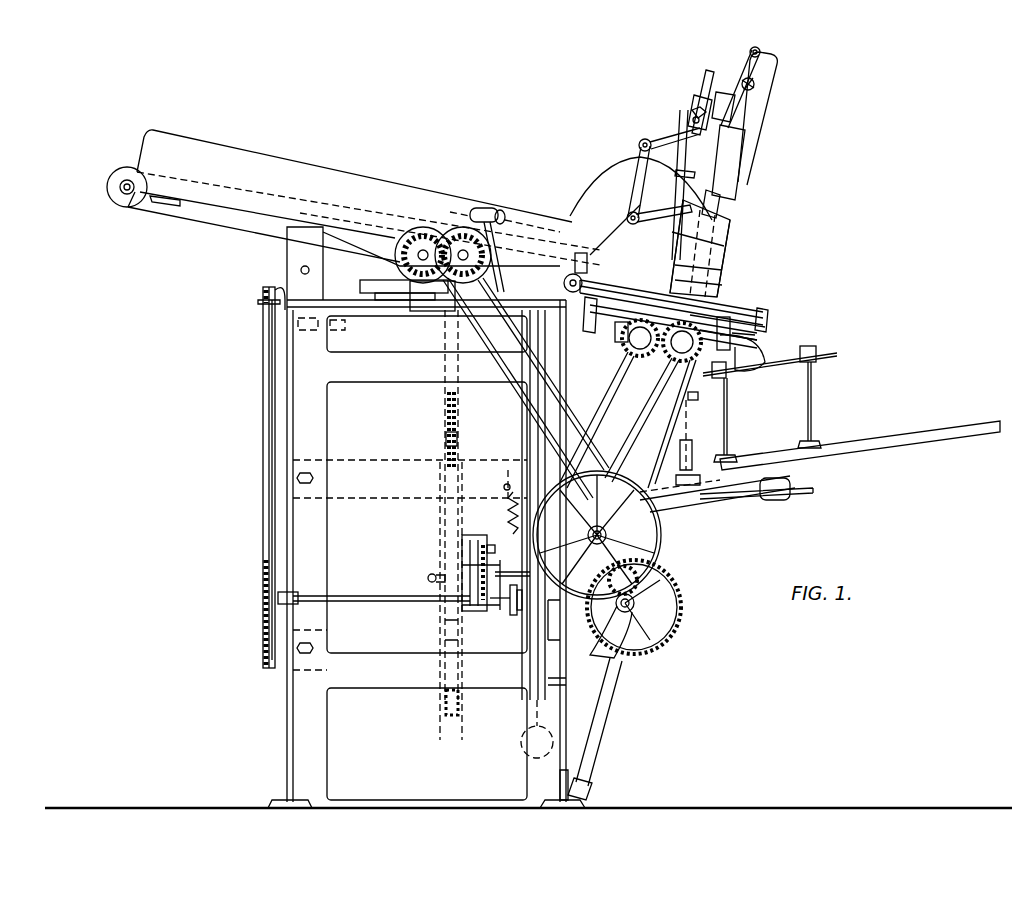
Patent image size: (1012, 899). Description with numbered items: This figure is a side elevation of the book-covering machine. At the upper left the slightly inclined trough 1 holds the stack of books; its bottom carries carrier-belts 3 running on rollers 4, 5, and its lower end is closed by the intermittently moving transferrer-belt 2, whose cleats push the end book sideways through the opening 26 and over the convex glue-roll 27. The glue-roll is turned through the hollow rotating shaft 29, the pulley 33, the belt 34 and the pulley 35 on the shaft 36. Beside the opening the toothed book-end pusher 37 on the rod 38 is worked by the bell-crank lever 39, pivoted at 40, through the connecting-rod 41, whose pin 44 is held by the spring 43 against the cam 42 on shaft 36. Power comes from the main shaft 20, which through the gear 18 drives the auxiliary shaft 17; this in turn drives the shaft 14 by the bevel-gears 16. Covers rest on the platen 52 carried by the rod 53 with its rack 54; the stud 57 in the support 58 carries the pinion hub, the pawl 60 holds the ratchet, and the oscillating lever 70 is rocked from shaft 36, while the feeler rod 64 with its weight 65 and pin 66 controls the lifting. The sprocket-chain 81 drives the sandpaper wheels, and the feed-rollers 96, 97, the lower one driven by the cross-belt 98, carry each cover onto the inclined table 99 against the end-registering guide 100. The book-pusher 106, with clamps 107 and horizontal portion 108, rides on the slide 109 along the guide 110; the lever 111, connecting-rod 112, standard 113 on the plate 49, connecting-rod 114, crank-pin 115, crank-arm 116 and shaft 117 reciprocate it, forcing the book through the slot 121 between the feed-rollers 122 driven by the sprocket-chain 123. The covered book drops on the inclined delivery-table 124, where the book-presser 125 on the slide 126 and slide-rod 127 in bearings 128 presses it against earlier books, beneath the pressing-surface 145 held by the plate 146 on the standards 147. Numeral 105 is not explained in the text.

The trough 1 is at (368, 197).
The transferrer-belt 2 is at (718, 236).
The carrier-belts 3 is at (206, 225).
The roller 4 is at (107, 188).
The roller 5 is at (746, 343).
The shaft 14 is at (601, 726).
The bevel-gears 16 is at (637, 583).
The auxiliary shaft 17 is at (666, 642).
The gear 18 is at (664, 612).
The main shaft 20 is at (645, 556).
The opening 26 is at (724, 256).
The glue-roll 27 is at (726, 274).
The hollow rotating shaft 29 is at (282, 285).
The pulley 33 is at (262, 338).
The belt 34 is at (262, 493).
The pulley 35 is at (262, 614).
The shaft 36 is at (376, 595).
The book-end pusher 37 is at (602, 207).
The rod 38 is at (500, 212).
The bell-crank lever 39 is at (494, 228).
The pivot 40 is at (495, 302).
The connecting-rod 41 is at (524, 368).
The cam 42 is at (501, 612).
The spring 43 is at (508, 517).
The pin 44 is at (515, 615).
The plate 49 is at (678, 180).
The platen 52 is at (396, 298).
The rod 53 is at (442, 407).
The rack 54 is at (443, 440).
The stud 57 is at (430, 576).
The support 58 is at (440, 521).
The pawl 60 is at (499, 540).
The rod 64 is at (548, 681).
The weight 65 is at (538, 740).
The pin 66 is at (512, 563).
The oscillating lever 70 is at (458, 627).
The sprocket-chain 81 is at (520, 400).
The lower feed-roller 96 is at (568, 274).
The upper feed-roller 97 is at (580, 260).
The cross-belt 98 is at (628, 420).
The inclined table 99 is at (768, 328).
The end-registering guide 100 is at (770, 314).
The bar 105 is at (768, 304).
The book-pusher 106 is at (742, 147).
The clamps 107 is at (693, 106).
The horizontal portion 108 is at (722, 212).
The slide 109 is at (722, 90).
The guide 110 is at (706, 80).
The lever 111 is at (672, 132).
The connecting-rod 112 is at (640, 170).
The standard 113 is at (659, 212).
The connecting-rod 114 is at (760, 74).
The crank-pin 115 is at (757, 47).
The crank-arm 116 is at (759, 58).
The shaft 117 is at (754, 88).
The slot 121 is at (722, 303).
The feed-rollers 122 is at (630, 342).
The sprocket-chain 123 is at (665, 357).
The inclined delivery-table 124 is at (877, 446).
The book-presser 125 is at (686, 440).
The slide 126 is at (708, 508).
The slide-rod 127 is at (814, 491).
The bearings 128 is at (508, 486).
The pressing-surface 145 is at (711, 400).
The plate 146 is at (770, 367).
The standards 147 is at (806, 406).